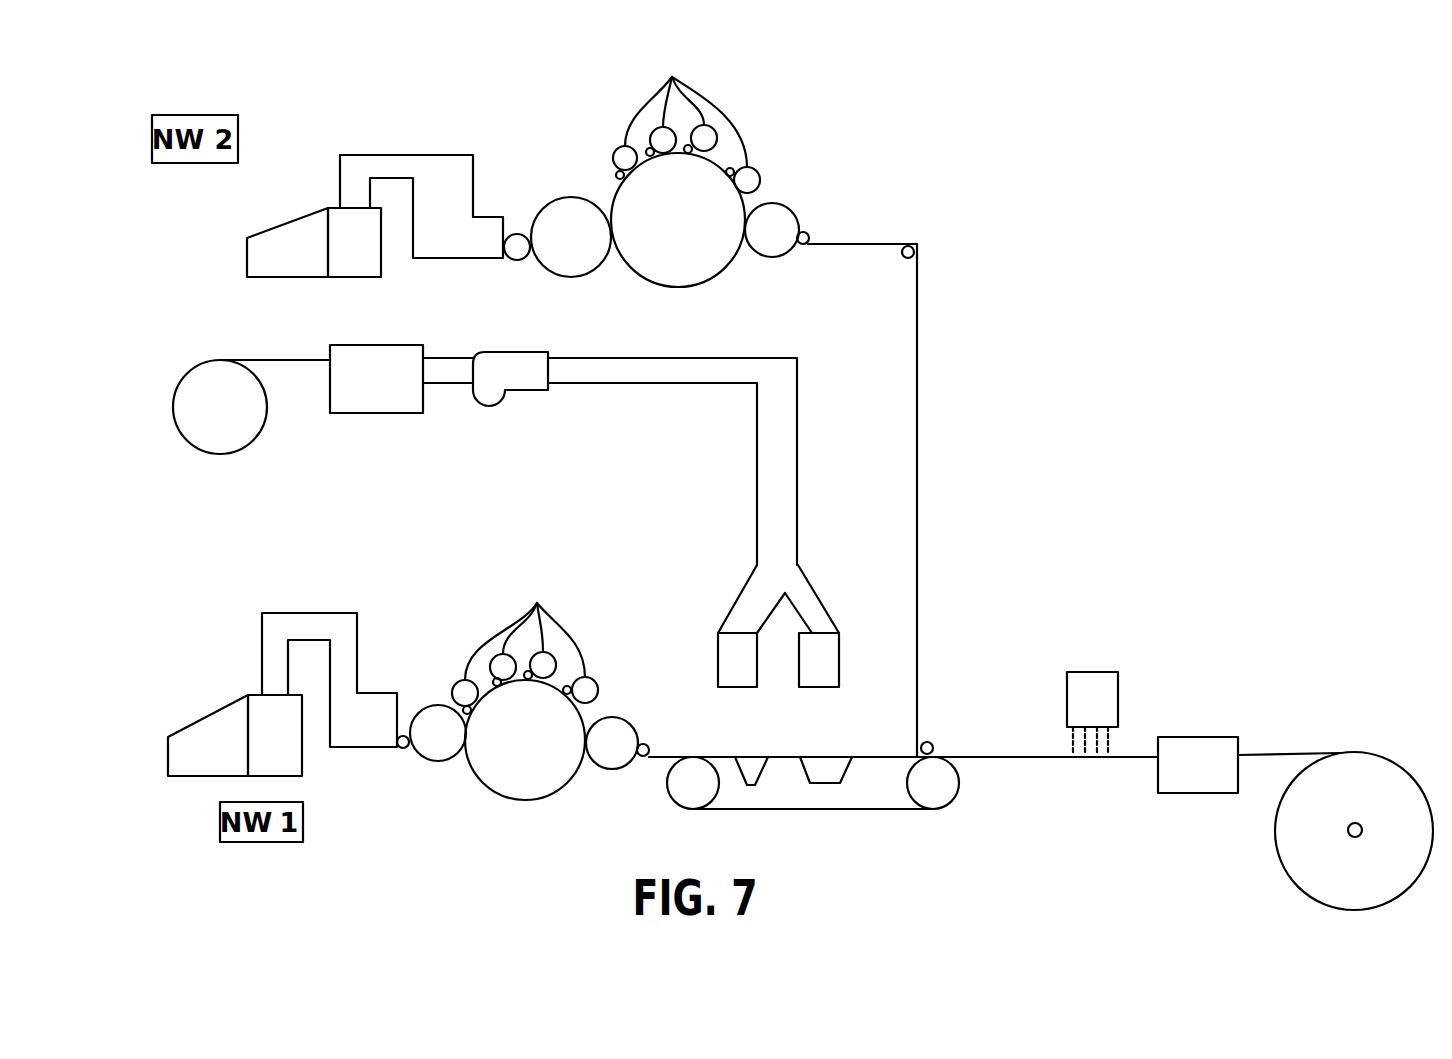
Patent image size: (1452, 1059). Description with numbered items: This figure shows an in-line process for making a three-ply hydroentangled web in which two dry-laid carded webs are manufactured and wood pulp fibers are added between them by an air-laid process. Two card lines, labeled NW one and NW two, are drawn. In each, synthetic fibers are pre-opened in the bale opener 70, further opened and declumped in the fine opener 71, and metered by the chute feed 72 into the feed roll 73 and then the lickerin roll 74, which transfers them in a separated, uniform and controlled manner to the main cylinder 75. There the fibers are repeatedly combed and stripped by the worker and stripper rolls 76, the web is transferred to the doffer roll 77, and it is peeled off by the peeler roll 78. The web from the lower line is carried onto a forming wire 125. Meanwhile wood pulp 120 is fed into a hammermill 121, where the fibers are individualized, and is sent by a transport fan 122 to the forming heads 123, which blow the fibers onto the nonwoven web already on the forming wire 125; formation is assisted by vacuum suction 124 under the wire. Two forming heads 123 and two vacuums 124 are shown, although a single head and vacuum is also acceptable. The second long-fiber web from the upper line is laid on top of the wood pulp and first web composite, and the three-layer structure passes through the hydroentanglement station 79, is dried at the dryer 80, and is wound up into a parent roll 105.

The bale opener 70 is at (286, 229).
The fine opener 71 is at (353, 272).
The chute feed 72 is at (446, 250).
The feed roll 73 is at (517, 240).
The lickerin roll 74 is at (568, 200).
The main cylinder 75 is at (644, 268).
The worker and stripper rolls 76 is at (672, 77).
The doffer roll 77 is at (780, 213).
The peeler roll 78 is at (806, 245).
The hydroentanglement station 79 is at (1093, 675).
The dryer 80 is at (1207, 746).
The parent roll 105 is at (1285, 833).
The wood pulp 120 is at (250, 423).
The hammermill 121 is at (362, 413).
The transport fan 122 is at (527, 390).
The forming heads 123 is at (718, 653).
The vacuum suction 124 is at (758, 765).
The forming wire 125 is at (815, 811).